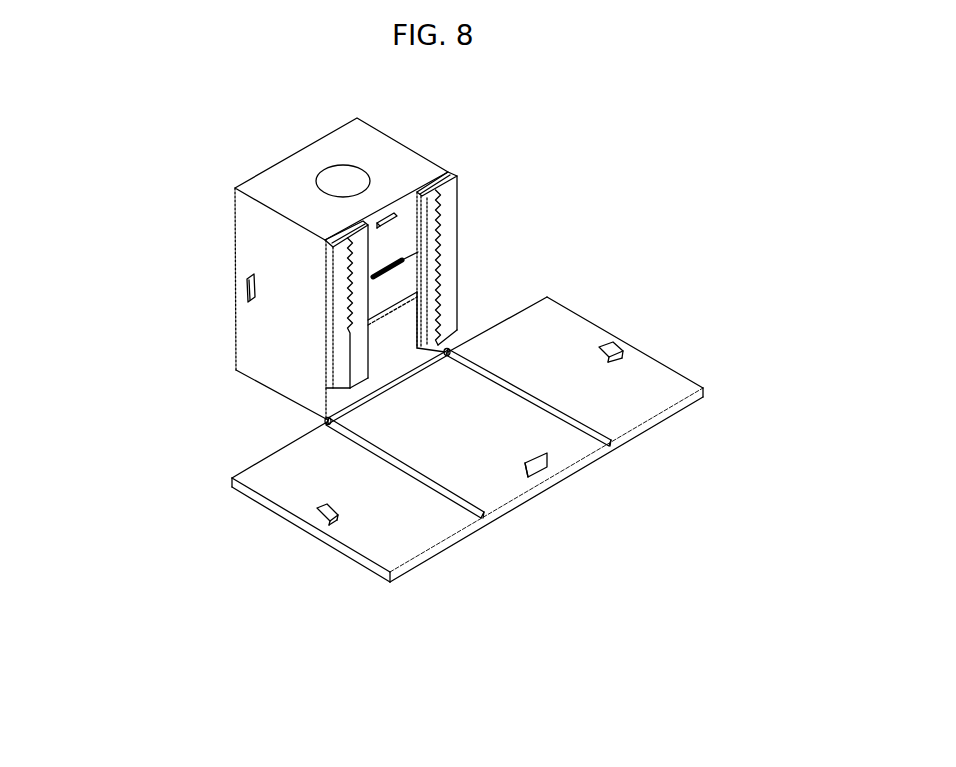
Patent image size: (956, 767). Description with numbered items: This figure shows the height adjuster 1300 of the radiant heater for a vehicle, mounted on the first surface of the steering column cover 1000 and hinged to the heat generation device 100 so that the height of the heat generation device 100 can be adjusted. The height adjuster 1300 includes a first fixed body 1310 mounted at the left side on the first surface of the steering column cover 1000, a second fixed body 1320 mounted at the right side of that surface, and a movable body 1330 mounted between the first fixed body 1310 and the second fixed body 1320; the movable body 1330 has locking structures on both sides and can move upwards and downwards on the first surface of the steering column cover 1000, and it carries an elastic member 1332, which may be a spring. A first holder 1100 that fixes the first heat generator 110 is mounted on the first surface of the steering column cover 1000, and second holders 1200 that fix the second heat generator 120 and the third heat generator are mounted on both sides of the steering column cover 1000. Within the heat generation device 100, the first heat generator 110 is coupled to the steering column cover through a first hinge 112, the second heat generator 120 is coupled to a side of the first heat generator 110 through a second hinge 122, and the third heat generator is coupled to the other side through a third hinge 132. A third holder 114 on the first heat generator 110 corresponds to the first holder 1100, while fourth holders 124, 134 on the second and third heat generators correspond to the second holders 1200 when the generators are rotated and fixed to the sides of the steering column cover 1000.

The heat generation device 100 is at (474, 450).
The first heat generator 110 is at (415, 483).
The first hinge 112 is at (323, 417).
The third holder 114 is at (558, 485).
The second heat generator 120 is at (287, 536).
The second hinge 122 is at (447, 498).
The fourth holder 124 is at (320, 510).
The third hinge 132 is at (590, 425).
The fourth holder 134 is at (622, 348).
The steering column cover 1000 is at (252, 243).
The first holder 1100 is at (396, 218).
The second holder 1200 is at (247, 290).
The height adjuster 1300 is at (330, 252).
The first fixed body 1310 is at (340, 303).
The second fixed body 1320 is at (450, 188).
The movable body 1330 is at (398, 340).
The elastic member 1332 is at (402, 262).